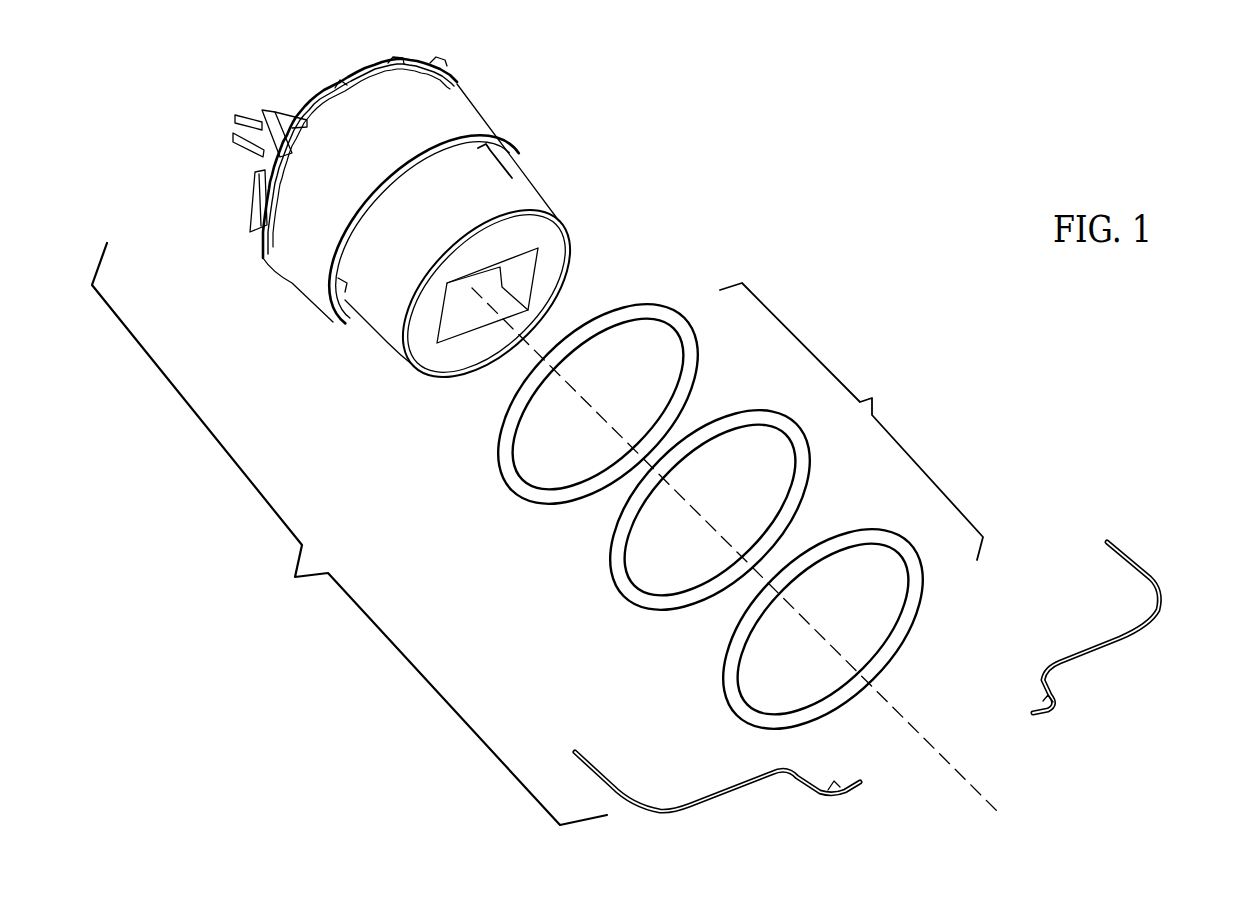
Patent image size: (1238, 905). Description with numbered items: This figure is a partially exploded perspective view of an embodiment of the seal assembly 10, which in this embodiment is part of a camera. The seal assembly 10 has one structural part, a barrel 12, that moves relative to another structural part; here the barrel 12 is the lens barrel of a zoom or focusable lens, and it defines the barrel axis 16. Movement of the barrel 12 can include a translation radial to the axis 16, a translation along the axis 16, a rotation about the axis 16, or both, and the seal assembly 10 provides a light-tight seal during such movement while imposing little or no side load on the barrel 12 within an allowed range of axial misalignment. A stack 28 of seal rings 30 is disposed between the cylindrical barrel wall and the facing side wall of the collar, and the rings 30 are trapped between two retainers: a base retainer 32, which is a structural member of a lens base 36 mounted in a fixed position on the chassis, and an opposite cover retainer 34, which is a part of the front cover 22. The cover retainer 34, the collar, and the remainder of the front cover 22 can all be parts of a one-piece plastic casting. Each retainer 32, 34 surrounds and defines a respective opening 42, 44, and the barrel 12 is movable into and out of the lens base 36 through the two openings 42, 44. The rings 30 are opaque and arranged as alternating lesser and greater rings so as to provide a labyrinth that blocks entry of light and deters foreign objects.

The seal assembly 10 is at (295, 577).
The barrel 12 is at (388, 317).
The axis 16 is at (998, 812).
The front cover 22 is at (1163, 575).
The stack 28 is at (872, 398).
The seal rings 30 is at (516, 494).
The base retainer 32 is at (1035, 713).
The cover retainer 34 is at (520, 167).
The lens base 36 is at (300, 270).
The opening 42 is at (887, 765).
The opening 44 is at (417, 187).